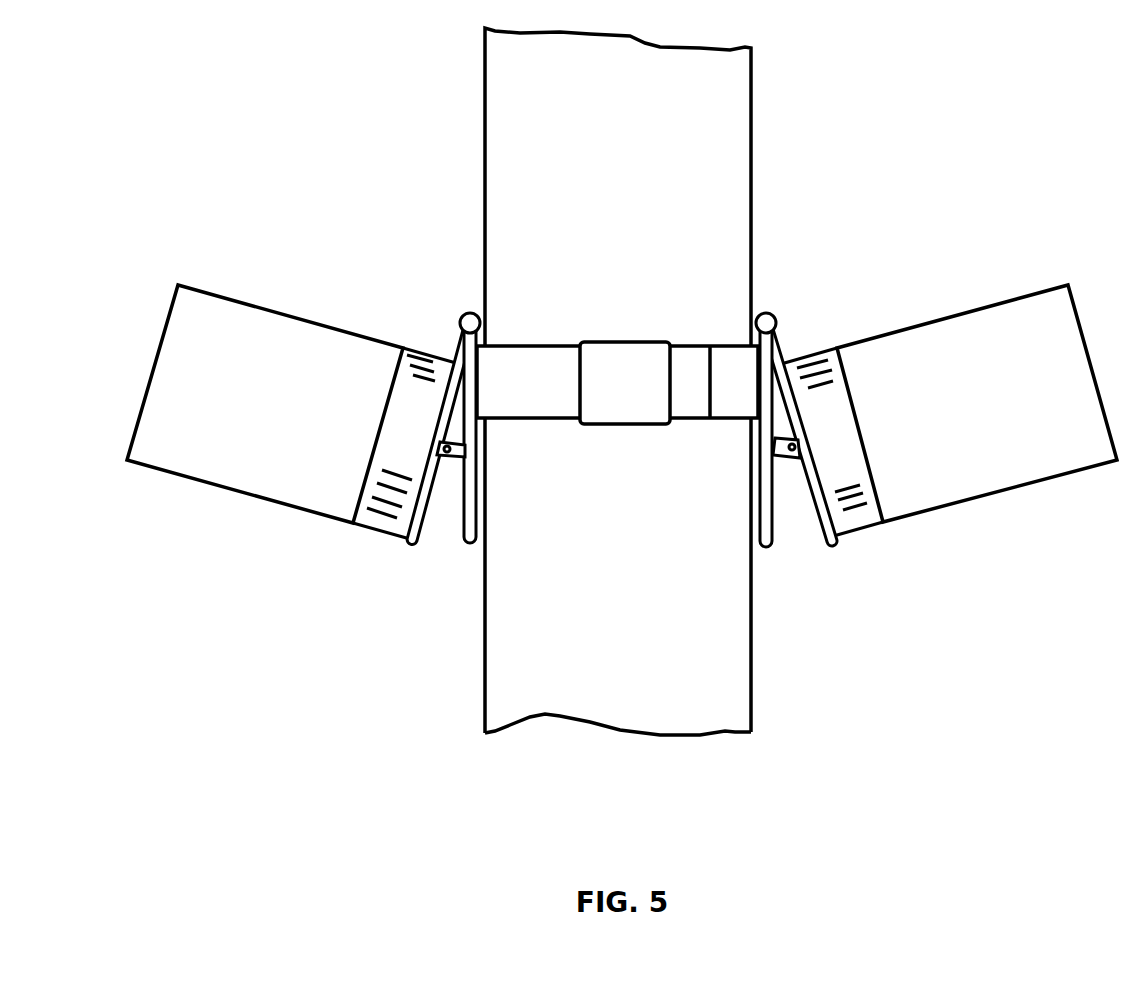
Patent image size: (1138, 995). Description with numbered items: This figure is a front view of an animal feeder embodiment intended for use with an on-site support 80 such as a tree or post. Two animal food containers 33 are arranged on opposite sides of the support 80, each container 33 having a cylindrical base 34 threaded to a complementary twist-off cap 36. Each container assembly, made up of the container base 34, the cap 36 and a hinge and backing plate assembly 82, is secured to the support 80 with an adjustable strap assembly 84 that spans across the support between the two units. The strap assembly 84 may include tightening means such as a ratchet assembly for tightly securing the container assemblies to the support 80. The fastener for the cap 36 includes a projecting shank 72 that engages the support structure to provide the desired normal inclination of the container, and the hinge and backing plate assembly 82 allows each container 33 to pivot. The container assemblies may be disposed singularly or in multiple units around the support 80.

The animal food container 33 is at (595, 390).
The cylindrical base 34 is at (195, 462).
The twist-off cap 36 is at (862, 520).
The projecting shank 72 is at (569, 470).
The on-site support 80 is at (520, 115).
The hinge and backing plate assembly 82 is at (463, 313).
The adjustable strap assembly 84 is at (617, 477).